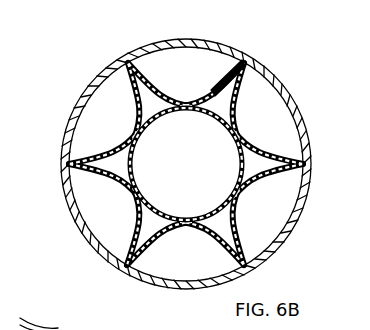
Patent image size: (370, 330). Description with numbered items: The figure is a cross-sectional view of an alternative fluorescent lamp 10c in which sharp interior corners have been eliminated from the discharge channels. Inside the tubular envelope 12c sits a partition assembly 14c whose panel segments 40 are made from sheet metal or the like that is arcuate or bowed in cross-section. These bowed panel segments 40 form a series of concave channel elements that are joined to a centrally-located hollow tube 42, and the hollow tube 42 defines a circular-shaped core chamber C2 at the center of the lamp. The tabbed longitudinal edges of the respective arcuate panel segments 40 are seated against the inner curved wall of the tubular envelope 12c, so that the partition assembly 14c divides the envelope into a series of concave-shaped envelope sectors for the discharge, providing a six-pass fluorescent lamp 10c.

The fluorescent lamp 10c is at (72, 77).
The tubular envelope 12c is at (194, 44).
The partition assembly 14c is at (118, 235).
The panel segments 40 is at (145, 76).
The hollow tube 42 is at (140, 189).
The core chamber C2 is at (173, 149).